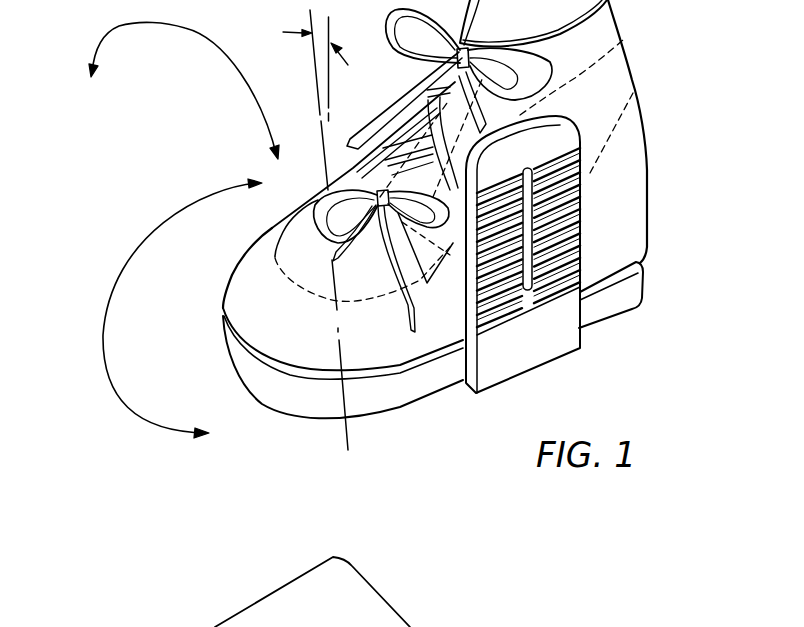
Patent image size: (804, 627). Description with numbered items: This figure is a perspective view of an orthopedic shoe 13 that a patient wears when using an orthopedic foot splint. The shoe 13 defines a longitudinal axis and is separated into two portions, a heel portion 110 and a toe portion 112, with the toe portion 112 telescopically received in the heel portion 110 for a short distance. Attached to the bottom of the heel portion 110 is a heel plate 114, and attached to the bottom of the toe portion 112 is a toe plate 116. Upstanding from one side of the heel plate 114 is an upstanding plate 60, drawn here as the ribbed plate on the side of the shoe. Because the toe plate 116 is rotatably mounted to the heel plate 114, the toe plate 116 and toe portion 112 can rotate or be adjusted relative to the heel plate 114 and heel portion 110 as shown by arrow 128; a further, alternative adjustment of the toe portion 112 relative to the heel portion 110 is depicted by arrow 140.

The shoe 13 is at (451, 232).
The upstanding plate 60 is at (557, 342).
The heel portion 110 is at (630, 220).
The toe portion 112 is at (245, 301).
The heel plate 114 is at (623, 298).
The toe plate 116 is at (407, 397).
The arrow 128 is at (207, 43).
The arrow 140 is at (128, 247).